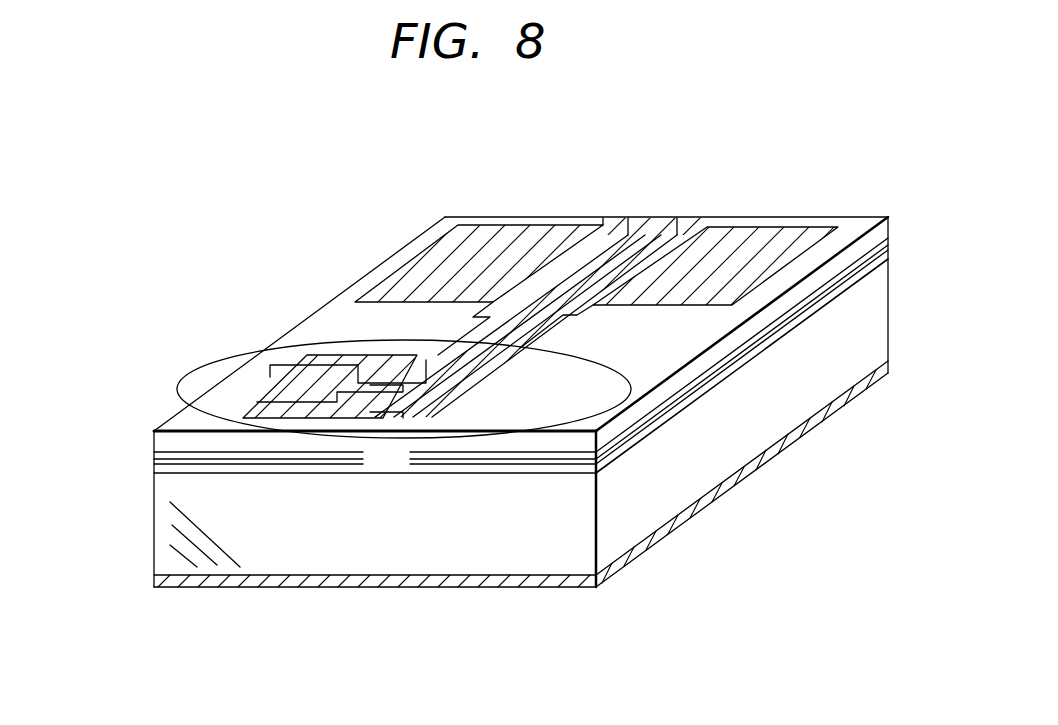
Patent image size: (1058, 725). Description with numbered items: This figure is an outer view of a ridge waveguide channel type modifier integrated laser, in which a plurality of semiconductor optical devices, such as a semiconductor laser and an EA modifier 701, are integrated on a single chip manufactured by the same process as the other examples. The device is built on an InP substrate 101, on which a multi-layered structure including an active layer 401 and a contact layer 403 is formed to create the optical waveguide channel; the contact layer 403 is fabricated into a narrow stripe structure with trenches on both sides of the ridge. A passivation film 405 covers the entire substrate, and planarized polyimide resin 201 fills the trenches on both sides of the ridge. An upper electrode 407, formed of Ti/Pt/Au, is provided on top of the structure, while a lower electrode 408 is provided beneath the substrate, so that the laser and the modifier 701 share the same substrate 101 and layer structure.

The InP substrate 101 is at (568, 547).
The planarized polyimide resin 201 is at (263, 382).
The active layer 401 is at (153, 458).
The contact layer 403 is at (162, 443).
The passivation film 405 is at (185, 425).
The upper electrode 407 is at (466, 366).
The lower electrode 408 is at (713, 492).
The EA modifier 701 is at (618, 372).